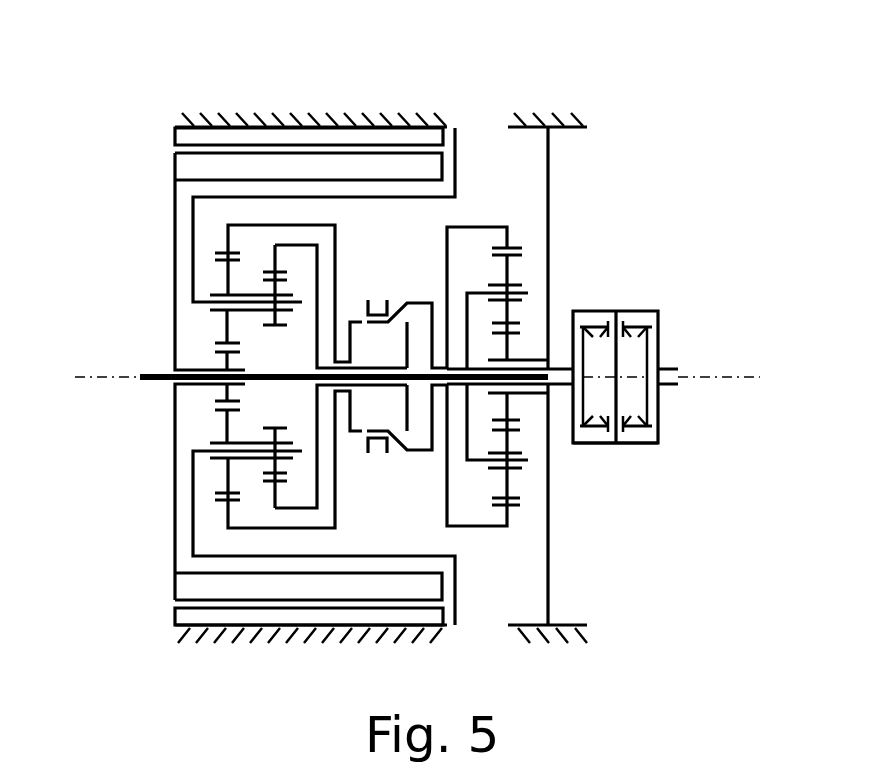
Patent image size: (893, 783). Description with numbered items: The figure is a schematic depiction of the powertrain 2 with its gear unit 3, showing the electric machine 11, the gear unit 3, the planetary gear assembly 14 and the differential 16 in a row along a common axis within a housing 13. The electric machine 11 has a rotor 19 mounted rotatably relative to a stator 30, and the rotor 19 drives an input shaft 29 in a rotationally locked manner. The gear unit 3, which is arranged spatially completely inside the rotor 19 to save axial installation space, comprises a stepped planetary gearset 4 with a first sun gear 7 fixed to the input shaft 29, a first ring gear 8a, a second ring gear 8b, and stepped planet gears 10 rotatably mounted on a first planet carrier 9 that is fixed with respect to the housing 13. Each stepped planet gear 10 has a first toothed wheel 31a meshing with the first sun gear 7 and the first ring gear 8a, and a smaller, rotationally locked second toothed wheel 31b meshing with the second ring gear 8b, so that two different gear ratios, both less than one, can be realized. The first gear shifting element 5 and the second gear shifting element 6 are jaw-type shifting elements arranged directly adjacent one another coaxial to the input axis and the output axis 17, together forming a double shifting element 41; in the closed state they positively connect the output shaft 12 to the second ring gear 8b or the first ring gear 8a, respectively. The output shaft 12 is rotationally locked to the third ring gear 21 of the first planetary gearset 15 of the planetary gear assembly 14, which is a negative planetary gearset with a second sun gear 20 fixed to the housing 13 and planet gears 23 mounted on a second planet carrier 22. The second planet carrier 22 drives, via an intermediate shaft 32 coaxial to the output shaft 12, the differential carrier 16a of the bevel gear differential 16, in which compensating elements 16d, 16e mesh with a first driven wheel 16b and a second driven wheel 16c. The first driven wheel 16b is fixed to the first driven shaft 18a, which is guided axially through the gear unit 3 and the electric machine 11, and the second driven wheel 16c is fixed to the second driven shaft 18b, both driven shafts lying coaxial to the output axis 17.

The powertrain 2 is at (158, 108).
The gear unit 3 is at (243, 548).
The stepped planetary gearset 4 is at (256, 234).
The first gear shifting element 5 is at (408, 460).
The second gear shifting element 6 is at (368, 460).
The first sun gear 7 is at (217, 398).
The first ring gear 8a is at (219, 251).
The second ring gear 8b is at (250, 293).
The first planet carrier 9 is at (200, 304).
The stepped planet gears 10 is at (274, 268).
The electric machine 11 is at (163, 611).
The output shaft 12 is at (443, 367).
The fixed housing 13 is at (224, 124).
The planetary gear assembly 14 is at (513, 214).
The first planetary gearset 15 is at (522, 234).
The differential 16 is at (642, 433).
The differential carrier 16a is at (601, 310).
The first driven wheel 16b is at (583, 407).
The second driven wheel 16c is at (660, 350).
The compensating element 16d is at (638, 322).
The compensating element 16e is at (663, 452).
The output axis 17 is at (304, 405).
The first driven shaft 18a is at (168, 373).
The second driven shaft 18b is at (673, 386).
The rotor 19 is at (205, 168).
The second sun gear 20 is at (516, 349).
The third ring gear 21 is at (519, 506).
The second planet carrier 22 is at (524, 465).
The planet gears 23 is at (509, 478).
The input shaft 29 is at (205, 358).
The stator 30 is at (205, 135).
The first toothed wheel 31a is at (220, 485).
The second toothed wheel 31b is at (255, 472).
The intermediate shaft 32 is at (579, 307).
The double shifting element 41 is at (379, 296).